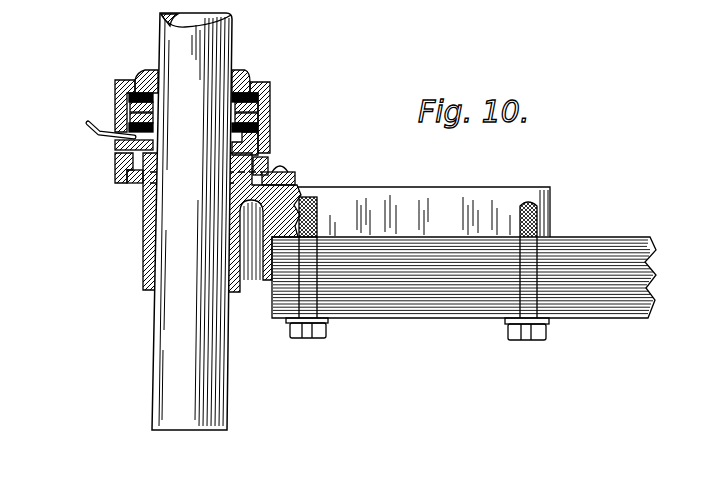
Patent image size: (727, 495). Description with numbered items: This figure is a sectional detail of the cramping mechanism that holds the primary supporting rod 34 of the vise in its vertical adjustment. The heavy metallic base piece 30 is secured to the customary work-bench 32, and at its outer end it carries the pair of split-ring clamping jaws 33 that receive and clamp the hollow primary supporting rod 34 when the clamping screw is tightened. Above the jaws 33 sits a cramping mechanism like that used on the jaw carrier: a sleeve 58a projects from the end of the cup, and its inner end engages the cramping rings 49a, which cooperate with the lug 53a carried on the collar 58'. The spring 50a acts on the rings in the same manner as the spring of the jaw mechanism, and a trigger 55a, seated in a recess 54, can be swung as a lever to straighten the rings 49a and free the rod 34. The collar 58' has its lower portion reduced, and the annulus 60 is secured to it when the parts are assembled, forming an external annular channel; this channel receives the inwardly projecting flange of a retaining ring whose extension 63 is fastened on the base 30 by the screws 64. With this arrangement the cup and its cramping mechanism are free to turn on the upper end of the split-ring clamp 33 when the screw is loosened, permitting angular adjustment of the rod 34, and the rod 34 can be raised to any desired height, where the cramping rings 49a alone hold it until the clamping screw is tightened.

The base piece 30 is at (451, 195).
The work-bench 32 is at (454, 307).
The split-ring clamping jaws 33 is at (148, 213).
The primary supporting rod 34 is at (222, 55).
The cramping rings 49a is at (131, 105).
The spring 50a is at (140, 82).
The lug 53a is at (272, 136).
The recess 54 is at (117, 168).
The trigger 55a is at (94, 133).
The sleeve 58a is at (158, 67).
The collar 58' is at (281, 138).
The annulus 60 is at (118, 178).
The extension 63 is at (294, 181).
The screws 64 is at (286, 168).